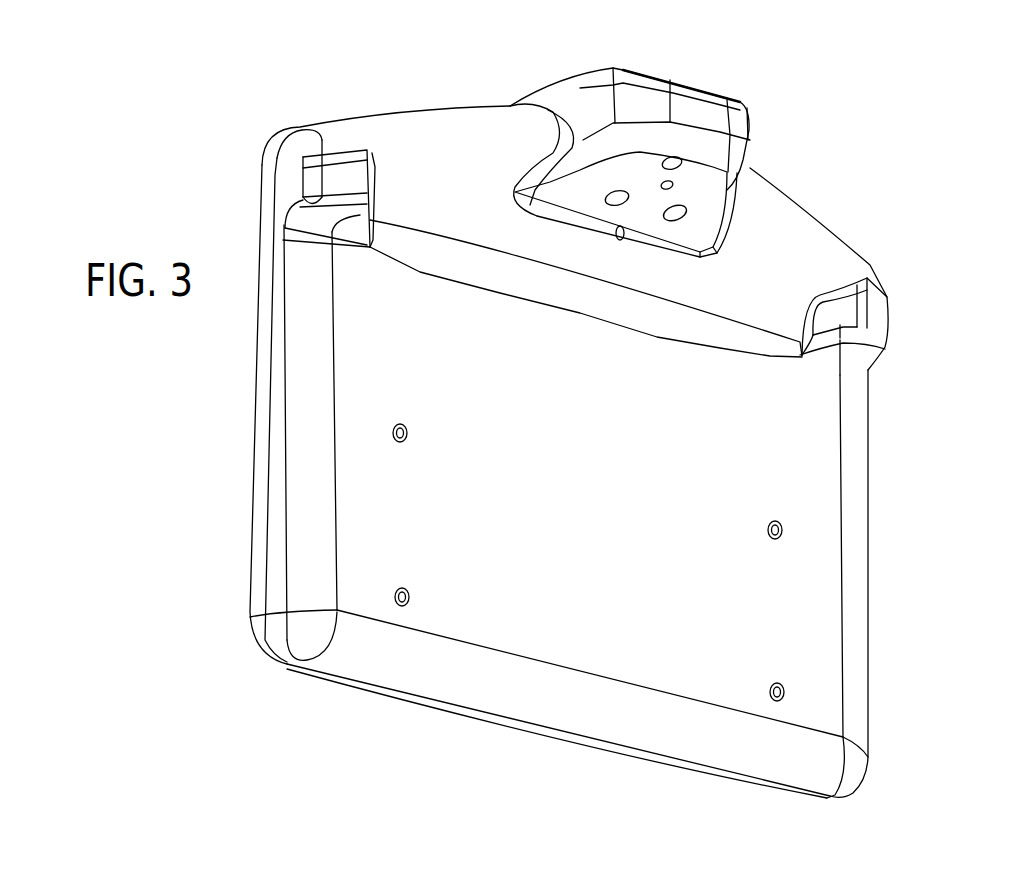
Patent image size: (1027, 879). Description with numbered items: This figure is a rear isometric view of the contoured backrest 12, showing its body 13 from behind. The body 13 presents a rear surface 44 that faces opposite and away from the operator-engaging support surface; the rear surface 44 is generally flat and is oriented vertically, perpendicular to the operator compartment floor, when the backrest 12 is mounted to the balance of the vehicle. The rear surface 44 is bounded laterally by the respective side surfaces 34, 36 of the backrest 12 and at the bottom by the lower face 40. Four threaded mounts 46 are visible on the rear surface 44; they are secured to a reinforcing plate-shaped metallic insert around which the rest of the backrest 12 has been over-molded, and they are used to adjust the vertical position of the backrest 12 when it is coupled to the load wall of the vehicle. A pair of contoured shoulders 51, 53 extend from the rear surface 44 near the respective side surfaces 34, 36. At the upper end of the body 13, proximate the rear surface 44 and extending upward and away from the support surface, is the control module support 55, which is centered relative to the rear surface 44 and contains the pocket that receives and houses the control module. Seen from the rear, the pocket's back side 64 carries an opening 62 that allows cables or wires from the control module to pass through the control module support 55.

The backrest 12 is at (979, 123).
The body 13 is at (879, 558).
The side surface 34 is at (867, 692).
The side surface 36 is at (260, 457).
The lower face 40 is at (437, 673).
The rear surface 44 is at (614, 531).
The threaded mounts 46 is at (407, 431).
The contoured shoulder 51 is at (880, 322).
The contoured shoulder 53 is at (337, 177).
The control module support 55 is at (757, 137).
The opening 62 is at (678, 158).
The back side 64 is at (645, 220).